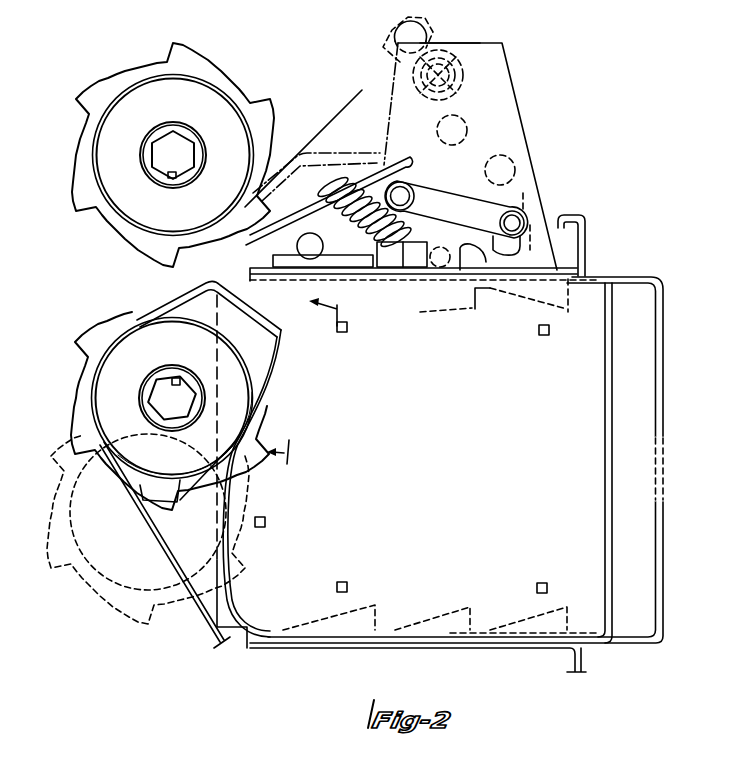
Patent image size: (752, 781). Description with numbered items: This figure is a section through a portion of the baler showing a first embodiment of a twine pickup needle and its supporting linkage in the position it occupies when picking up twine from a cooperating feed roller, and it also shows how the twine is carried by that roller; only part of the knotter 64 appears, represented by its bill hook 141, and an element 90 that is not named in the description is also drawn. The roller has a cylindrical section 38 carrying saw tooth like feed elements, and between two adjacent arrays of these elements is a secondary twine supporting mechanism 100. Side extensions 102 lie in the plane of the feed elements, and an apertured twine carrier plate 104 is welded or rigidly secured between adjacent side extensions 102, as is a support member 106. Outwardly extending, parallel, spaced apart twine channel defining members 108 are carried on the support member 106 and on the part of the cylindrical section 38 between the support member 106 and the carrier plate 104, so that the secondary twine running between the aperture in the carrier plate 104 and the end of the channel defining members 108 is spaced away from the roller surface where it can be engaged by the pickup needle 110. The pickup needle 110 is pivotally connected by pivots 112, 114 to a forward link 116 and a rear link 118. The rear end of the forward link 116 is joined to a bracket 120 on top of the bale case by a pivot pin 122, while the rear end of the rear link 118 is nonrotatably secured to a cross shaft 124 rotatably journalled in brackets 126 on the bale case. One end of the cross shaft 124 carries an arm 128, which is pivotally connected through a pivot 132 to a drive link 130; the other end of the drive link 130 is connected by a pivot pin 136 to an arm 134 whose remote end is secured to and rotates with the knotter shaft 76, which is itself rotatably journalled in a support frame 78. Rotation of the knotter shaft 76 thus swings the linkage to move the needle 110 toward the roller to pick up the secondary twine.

The cylindrical section 38 is at (175, 505).
The knotter 64 is at (318, 166).
The knotter shaft 76 is at (449, 53).
The support frame 78 is at (503, 113).
The lever arm 90 is at (272, 340).
The secondary twine supporting mechanism 100 is at (292, 317).
The side extensions 102 is at (324, 296).
The apertured twine carrier plate 104 is at (212, 291).
The support member 106 is at (268, 367).
The twine channel defining members 108 is at (125, 325).
The pickup needle 110 is at (282, 263).
The pivot 112 is at (312, 228).
The pivot 114 is at (407, 184).
The forward link 116 is at (403, 258).
The rear link 118 is at (474, 190).
The bracket 120 is at (477, 290).
The pivot pin 122 is at (500, 221).
The cross shaft 124 is at (517, 216).
The brackets 126 is at (527, 252).
The arm 128 is at (517, 186).
The drive link 130 is at (477, 110).
The pivot 132 is at (508, 157).
The arm 134 is at (438, 37).
The pivot pin 136 is at (392, 20).
The bill hook 141 is at (382, 258).